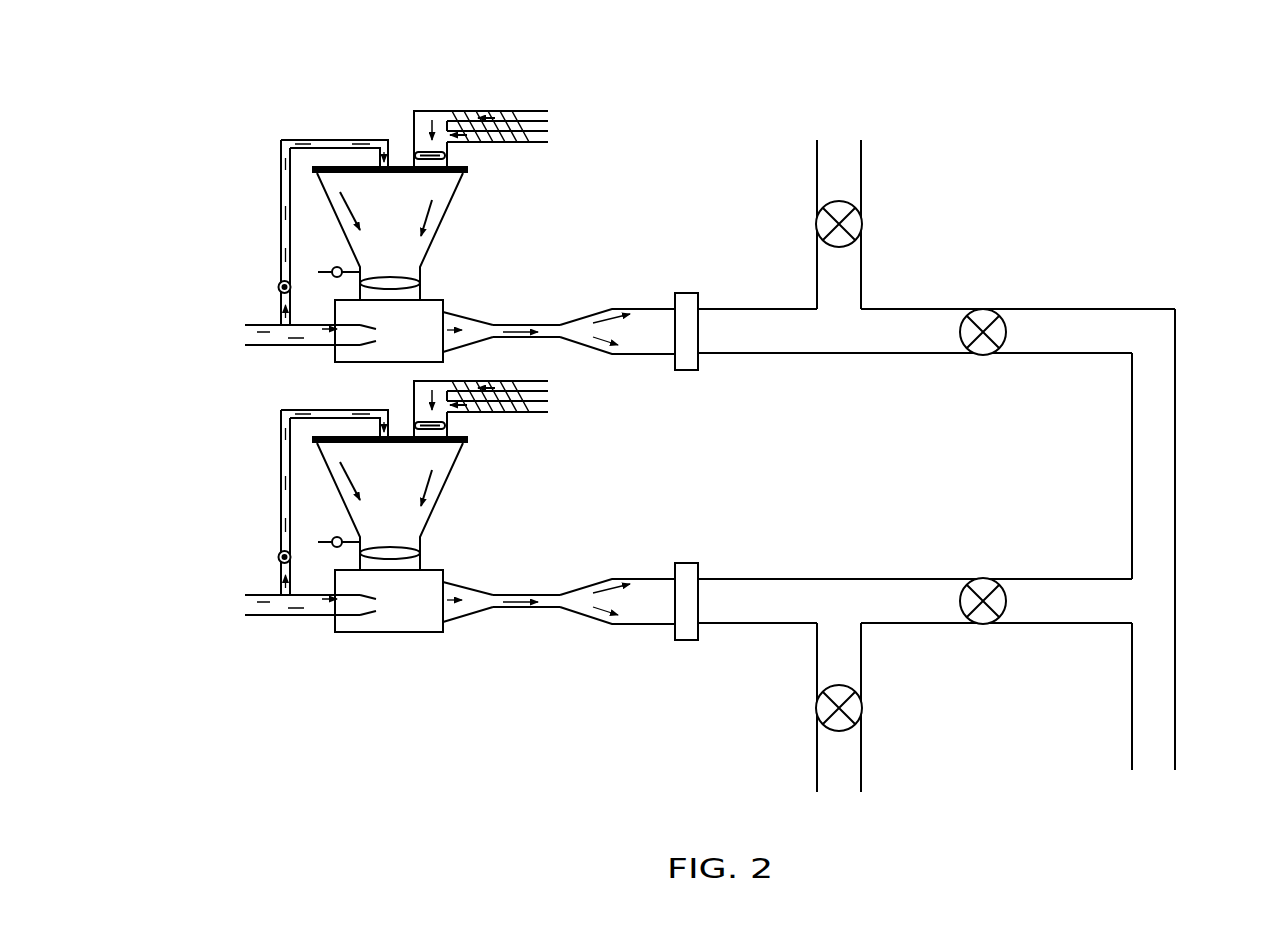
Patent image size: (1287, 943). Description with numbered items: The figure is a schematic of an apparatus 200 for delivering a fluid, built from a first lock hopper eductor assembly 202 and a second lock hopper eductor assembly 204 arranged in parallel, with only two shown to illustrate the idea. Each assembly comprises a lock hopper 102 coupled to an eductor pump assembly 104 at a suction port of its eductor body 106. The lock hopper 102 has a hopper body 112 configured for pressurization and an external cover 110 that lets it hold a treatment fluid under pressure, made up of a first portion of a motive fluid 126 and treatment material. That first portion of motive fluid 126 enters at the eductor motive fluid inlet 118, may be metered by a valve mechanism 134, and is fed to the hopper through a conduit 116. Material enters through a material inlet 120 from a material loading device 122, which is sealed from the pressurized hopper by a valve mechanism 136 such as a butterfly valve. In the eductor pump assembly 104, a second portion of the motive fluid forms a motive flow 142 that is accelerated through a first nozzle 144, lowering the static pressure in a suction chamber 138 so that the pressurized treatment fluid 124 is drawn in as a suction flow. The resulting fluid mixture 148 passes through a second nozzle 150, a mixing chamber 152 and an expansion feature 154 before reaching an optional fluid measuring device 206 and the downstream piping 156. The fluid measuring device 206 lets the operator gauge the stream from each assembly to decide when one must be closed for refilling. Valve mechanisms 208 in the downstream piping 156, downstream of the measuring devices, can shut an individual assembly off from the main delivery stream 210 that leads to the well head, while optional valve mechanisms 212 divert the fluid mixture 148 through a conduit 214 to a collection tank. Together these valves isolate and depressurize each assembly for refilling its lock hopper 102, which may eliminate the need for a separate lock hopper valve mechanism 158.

The lock hopper 102 is at (460, 226).
The eductor pump assembly 104 is at (308, 355).
The eductor body 106 is at (440, 634).
The external cover 110 is at (378, 173).
The hopper body 112 is at (454, 195).
The conduit 116 is at (280, 195).
The eductor motive fluid inlet 118 is at (246, 325).
The material inlet 120 is at (447, 156).
The material loading device 122 is at (521, 142).
The pressurized treatment fluid 124 is at (422, 228).
The first portion of a motive fluid 126 is at (300, 141).
The valve mechanism 134 is at (278, 287).
The valve mechanism 136 is at (413, 153).
The suction chamber 138 is at (405, 363).
The motive flow 142 is at (325, 604).
The first nozzle 144 is at (365, 614).
The fluid mixture 148 is at (600, 612).
The second nozzle 150 is at (478, 588).
The mixing chamber 152 is at (525, 325).
The expansion feature 154 is at (600, 310).
The downstream piping 156 is at (740, 309).
The lock hopper valve mechanism 158 is at (420, 283).
The apparatus 200 is at (1061, 128).
The first lock hopper eductor assembly 202 is at (672, 148).
The second lock hopper eductor assembly 204 is at (638, 734).
The fluid measuring device 206 is at (686, 370).
The valve mechanism 208 is at (985, 357).
The main delivery stream 210 is at (1177, 470).
The valve mechanism 212 is at (862, 224).
The conduit 214 is at (862, 155).